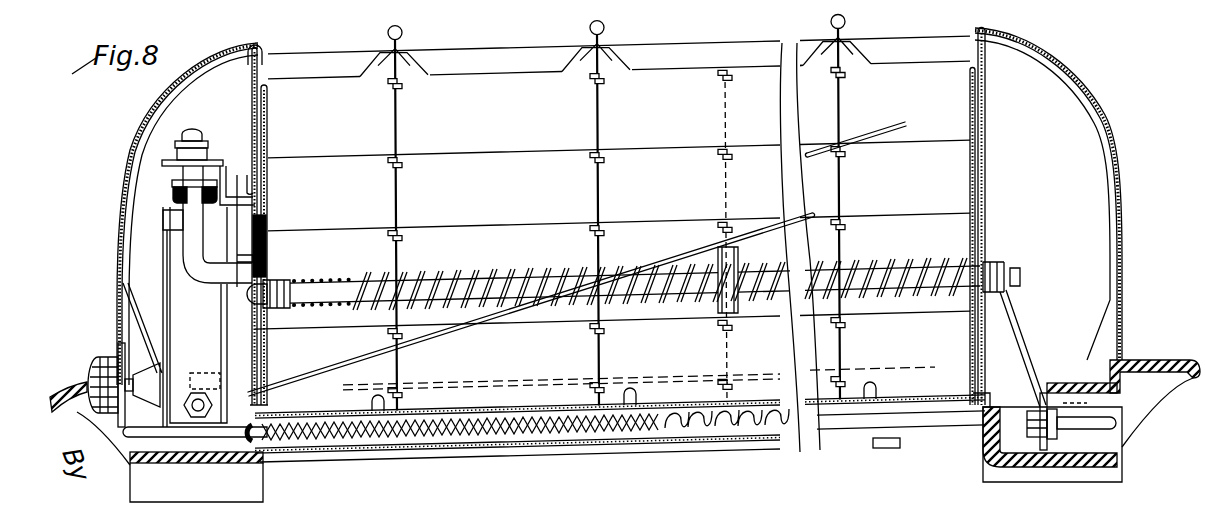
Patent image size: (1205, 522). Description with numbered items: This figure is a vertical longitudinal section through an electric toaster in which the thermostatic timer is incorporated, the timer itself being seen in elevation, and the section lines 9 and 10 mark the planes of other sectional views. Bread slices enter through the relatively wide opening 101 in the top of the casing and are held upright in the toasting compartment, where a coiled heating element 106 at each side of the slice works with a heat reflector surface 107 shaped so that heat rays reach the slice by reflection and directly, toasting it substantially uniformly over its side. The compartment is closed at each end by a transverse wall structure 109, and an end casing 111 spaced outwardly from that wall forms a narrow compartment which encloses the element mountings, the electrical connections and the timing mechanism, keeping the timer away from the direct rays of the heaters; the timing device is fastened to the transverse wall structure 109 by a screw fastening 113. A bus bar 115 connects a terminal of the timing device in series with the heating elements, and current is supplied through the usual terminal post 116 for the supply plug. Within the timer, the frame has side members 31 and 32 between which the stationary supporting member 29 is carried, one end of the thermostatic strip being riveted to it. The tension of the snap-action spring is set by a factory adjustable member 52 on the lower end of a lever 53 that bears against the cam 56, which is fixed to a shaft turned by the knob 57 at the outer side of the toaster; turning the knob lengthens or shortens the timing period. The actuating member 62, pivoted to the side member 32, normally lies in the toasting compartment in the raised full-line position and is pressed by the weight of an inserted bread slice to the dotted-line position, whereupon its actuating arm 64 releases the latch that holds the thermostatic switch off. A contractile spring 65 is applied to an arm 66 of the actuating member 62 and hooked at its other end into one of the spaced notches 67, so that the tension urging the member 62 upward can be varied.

The section line 9- 9 is at (243, 44).
The section line 10- 10 is at (490, 37).
The opening 101 is at (643, 87).
The coiled heating element 106 is at (463, 275).
The heat reflector surface 107 is at (619, 185).
The transverse wall structure 109 is at (265, 128).
The end casing 111 is at (140, 141).
The screw fastening 113 is at (243, 184).
The bus bar 115 is at (192, 229).
The terminal post 116 is at (1118, 424).
The stationary supporting member 29 is at (165, 224).
The side member 31 is at (163, 281).
The side member 32 is at (230, 309).
The adjustable member 52 is at (158, 442).
The lever 53 is at (202, 357).
The cam 56 is at (138, 360).
The knob 57 is at (100, 357).
The actuating member 62 is at (806, 157).
The actuating arm 64 is at (196, 392).
The contractile spring 65 is at (543, 440).
The arm 66 is at (237, 466).
The spaced notches 67 is at (767, 447).